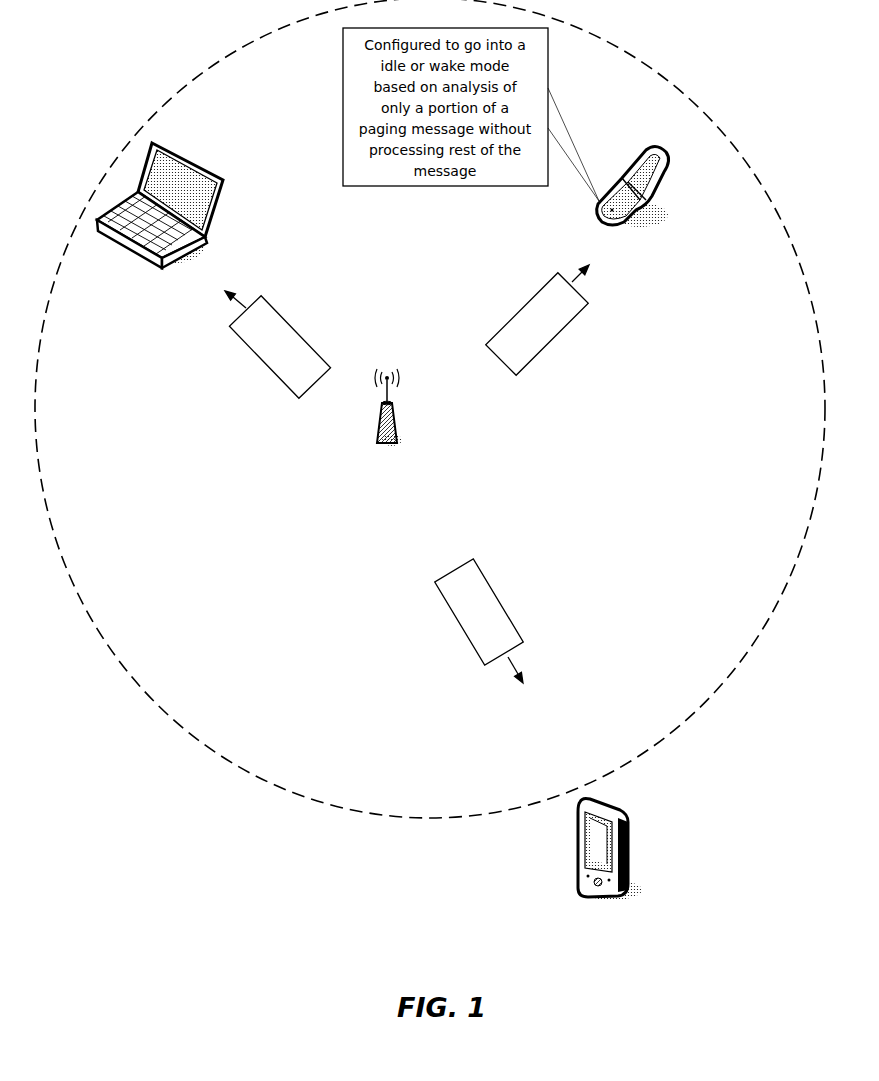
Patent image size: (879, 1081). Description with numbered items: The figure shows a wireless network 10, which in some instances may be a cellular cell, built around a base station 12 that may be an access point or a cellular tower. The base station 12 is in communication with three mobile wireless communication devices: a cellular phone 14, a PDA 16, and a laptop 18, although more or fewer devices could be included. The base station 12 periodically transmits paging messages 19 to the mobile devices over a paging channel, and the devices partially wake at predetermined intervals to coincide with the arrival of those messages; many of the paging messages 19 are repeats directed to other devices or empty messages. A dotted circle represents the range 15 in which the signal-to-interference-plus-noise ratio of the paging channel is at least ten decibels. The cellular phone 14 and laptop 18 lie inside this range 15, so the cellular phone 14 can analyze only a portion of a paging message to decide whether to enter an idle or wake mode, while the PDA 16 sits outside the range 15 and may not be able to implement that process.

The wireless network 10 is at (433, 965).
The base station 12 is at (411, 420).
The cellular phone 14 is at (658, 199).
The range 15 is at (708, 693).
The PDA 16 is at (636, 858).
The laptop 18 is at (188, 219).
The paging message 19 is at (295, 328).